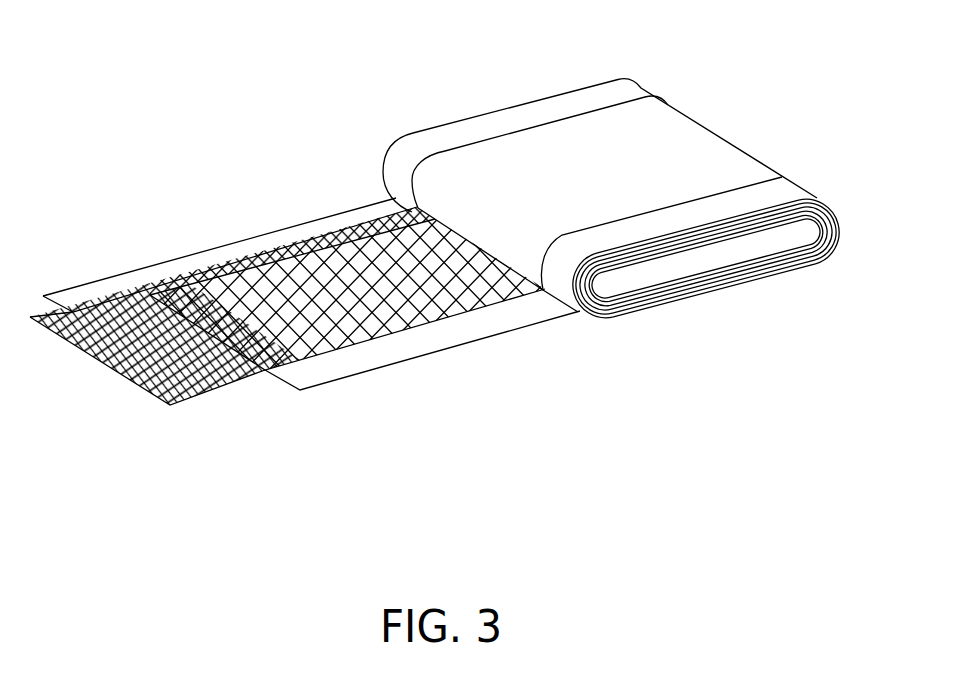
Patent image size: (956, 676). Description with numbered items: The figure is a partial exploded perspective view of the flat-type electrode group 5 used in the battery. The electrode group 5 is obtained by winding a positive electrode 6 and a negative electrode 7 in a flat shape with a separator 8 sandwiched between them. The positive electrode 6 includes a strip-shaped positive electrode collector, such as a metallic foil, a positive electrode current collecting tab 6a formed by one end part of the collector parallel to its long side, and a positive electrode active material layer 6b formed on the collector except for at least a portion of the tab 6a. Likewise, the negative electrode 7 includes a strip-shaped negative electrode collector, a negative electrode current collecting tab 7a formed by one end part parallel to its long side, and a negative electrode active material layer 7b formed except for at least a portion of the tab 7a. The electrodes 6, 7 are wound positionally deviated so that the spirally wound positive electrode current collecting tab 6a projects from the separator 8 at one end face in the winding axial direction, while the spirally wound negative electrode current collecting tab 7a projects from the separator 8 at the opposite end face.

The flat-type electrode group 5 is at (437, 236).
The positive electrode 6 is at (427, 168).
The positive electrode current collecting tab 6a is at (573, 107).
The positive electrode active material layer 6b is at (93, 312).
The negative electrode 7 is at (437, 300).
The negative electrode current collecting tab 7a is at (780, 192).
The negative electrode active material layer 7b is at (375, 318).
The separator 8 is at (258, 377).